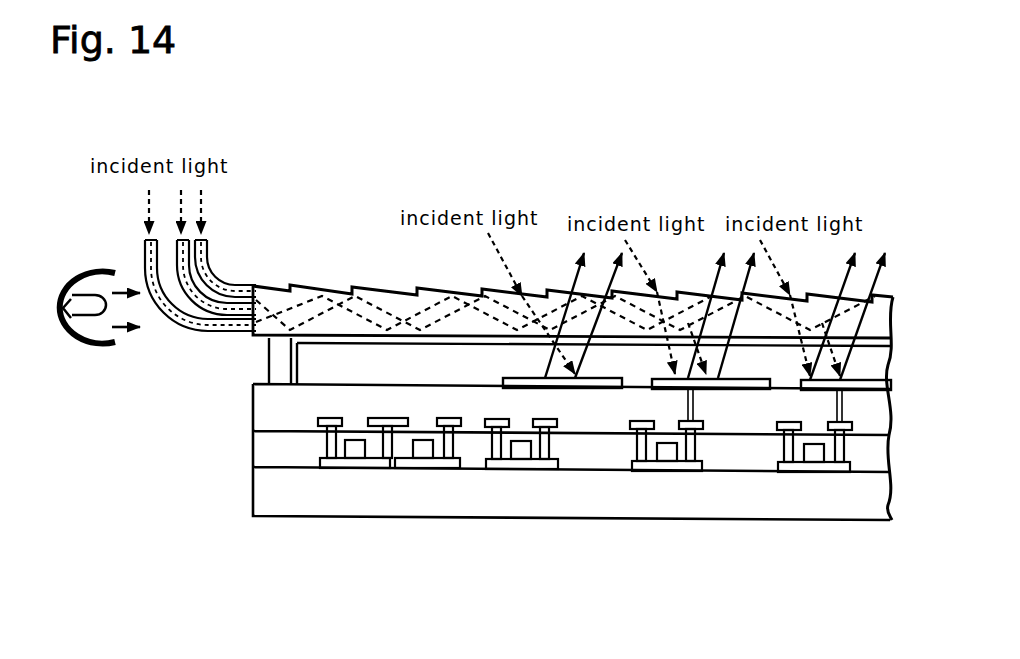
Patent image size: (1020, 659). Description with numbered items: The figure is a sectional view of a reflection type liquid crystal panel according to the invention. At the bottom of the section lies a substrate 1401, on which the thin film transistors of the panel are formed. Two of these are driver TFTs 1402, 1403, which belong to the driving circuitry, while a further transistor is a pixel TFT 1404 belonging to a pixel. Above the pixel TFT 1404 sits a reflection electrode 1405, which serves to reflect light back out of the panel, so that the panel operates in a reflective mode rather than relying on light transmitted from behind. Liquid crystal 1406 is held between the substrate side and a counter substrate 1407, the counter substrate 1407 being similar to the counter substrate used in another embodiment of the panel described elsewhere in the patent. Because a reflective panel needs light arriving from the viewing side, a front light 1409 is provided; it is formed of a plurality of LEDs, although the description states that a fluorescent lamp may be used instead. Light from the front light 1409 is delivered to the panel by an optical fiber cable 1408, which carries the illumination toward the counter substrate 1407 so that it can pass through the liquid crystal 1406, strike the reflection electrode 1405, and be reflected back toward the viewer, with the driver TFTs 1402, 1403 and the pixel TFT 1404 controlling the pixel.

The substrate 1401 is at (260, 498).
The driver TFT 1402 is at (355, 463).
The driver TFT 1403 is at (425, 463).
The pixel TFT 1404 is at (513, 464).
The reflection electrode 1405 is at (598, 389).
The liquid crystal 1406 is at (313, 372).
The counter substrate 1407 is at (288, 286).
The optical fiber cable 1408 is at (213, 273).
The front light 1409 is at (80, 346).